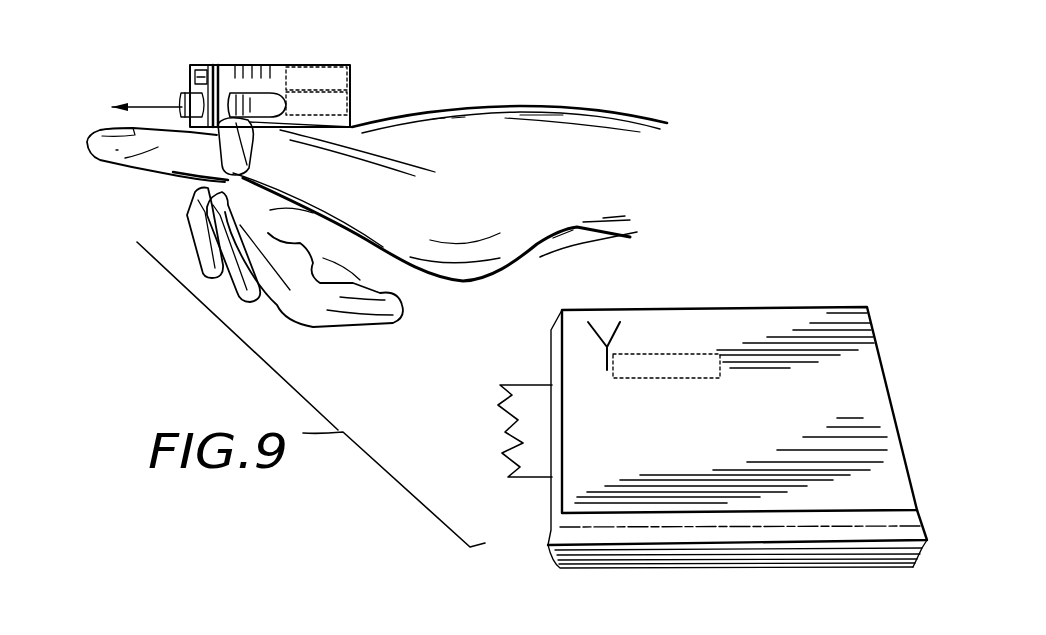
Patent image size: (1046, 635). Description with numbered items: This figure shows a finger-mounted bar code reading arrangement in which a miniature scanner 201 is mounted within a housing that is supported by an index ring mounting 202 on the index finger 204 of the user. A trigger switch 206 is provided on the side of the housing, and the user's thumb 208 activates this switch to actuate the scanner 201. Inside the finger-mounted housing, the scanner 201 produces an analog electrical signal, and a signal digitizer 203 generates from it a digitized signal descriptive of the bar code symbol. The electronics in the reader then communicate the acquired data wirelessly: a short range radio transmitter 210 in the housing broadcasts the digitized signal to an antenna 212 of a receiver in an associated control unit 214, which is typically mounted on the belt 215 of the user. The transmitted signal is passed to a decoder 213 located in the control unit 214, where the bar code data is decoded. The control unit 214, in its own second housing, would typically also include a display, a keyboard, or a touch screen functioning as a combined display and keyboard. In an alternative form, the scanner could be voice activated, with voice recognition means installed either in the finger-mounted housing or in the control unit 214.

The miniature scanner 201 is at (352, 69).
The index ring mounting 202 is at (352, 124).
The signal digitizer 203 is at (317, 116).
The index finger 204 is at (148, 158).
The trigger switch 206 is at (260, 99).
The thumb 208 is at (407, 197).
The short range radio transmitter 210 is at (363, 115).
The antenna 212 is at (600, 360).
The decoder 213 is at (678, 353).
The control unit 214 is at (720, 437).
The belt 215 is at (527, 442).